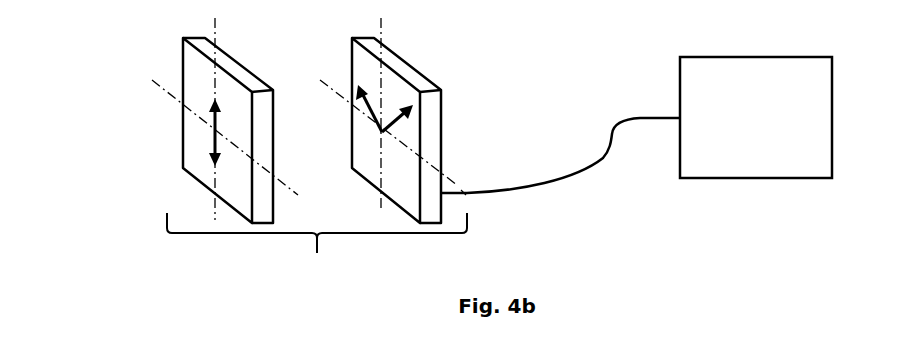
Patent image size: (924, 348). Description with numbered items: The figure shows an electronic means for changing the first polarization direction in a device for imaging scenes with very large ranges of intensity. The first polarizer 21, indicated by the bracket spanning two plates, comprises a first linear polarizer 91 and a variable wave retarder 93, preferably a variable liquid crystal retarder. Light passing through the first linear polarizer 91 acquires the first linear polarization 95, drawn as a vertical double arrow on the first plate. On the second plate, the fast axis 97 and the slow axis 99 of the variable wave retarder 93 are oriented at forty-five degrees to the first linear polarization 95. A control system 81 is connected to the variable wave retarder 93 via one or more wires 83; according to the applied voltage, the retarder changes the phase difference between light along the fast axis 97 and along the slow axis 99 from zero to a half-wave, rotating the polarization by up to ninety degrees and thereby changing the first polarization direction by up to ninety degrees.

The first polarizer 21 is at (317, 246).
The control system 81 is at (832, 118).
The one or more wires 83 is at (615, 127).
The first linear polarizer 91 is at (185, 128).
The variable wave retarder 93 is at (442, 165).
The first linear polarization 95 is at (212, 108).
The fast axis 97 is at (372, 103).
The slow axis 99 is at (415, 110).